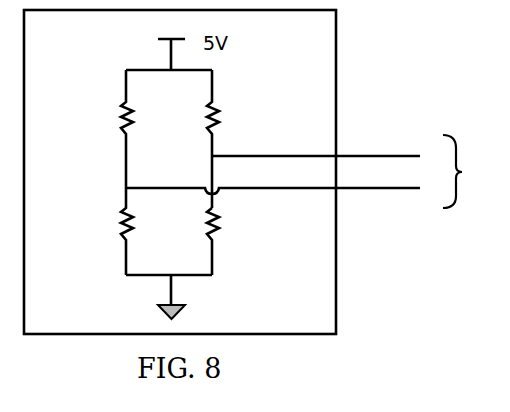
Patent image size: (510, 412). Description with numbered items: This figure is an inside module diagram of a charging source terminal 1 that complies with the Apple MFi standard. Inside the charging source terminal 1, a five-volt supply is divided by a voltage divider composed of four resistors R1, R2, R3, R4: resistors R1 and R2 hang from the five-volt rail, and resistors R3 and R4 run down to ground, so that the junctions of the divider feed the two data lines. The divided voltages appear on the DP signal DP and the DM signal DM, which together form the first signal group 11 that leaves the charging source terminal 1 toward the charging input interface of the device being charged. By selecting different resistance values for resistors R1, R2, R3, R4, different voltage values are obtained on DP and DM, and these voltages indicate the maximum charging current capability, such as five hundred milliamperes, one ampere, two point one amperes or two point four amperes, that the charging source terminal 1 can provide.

The charging source terminal 1 is at (180, 172).
The first signal group 11 is at (463, 172).
The resistor R1 is at (113, 129).
The resistor R2 is at (198, 139).
The resistor R3 is at (113, 231).
The resistor R4 is at (198, 241).
The DP signal DP is at (316, 144).
The DM signal DM is at (273, 179).